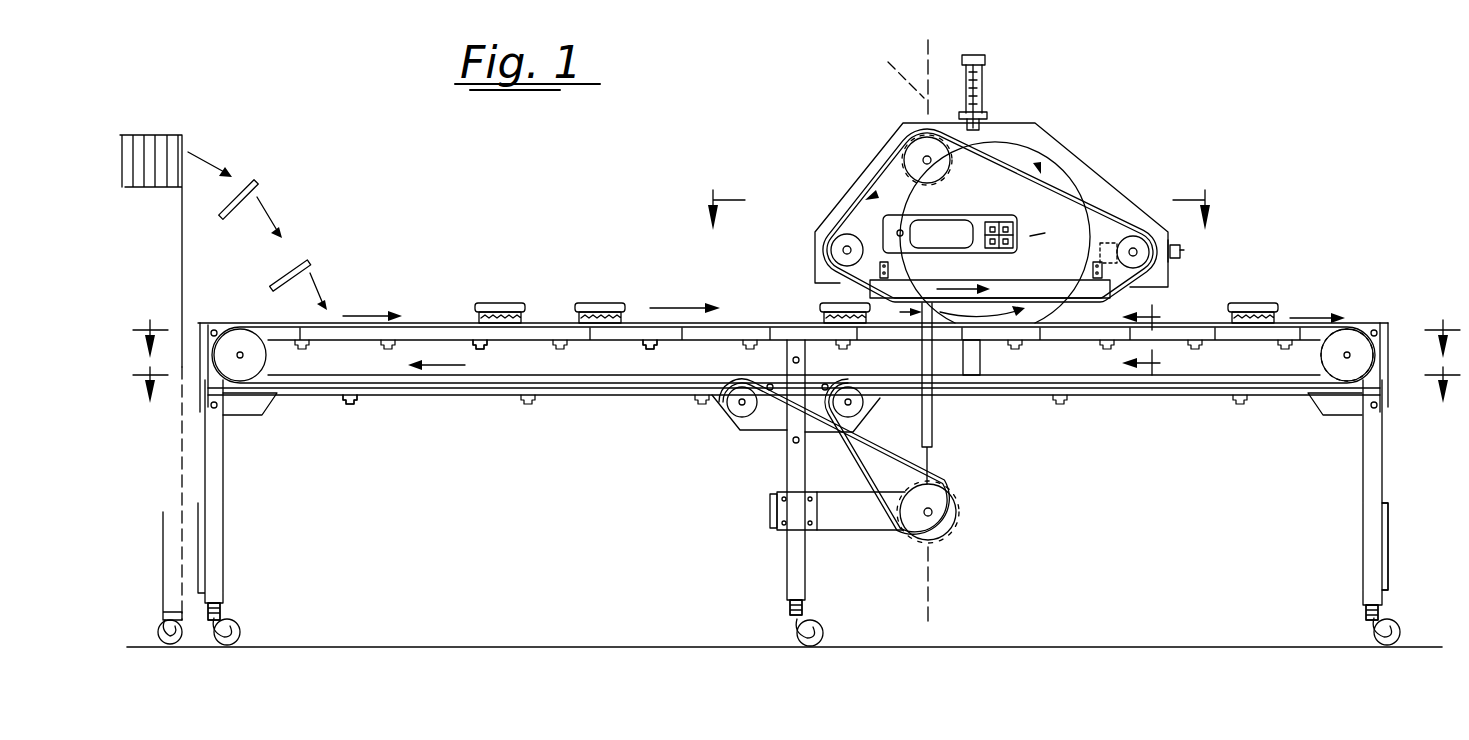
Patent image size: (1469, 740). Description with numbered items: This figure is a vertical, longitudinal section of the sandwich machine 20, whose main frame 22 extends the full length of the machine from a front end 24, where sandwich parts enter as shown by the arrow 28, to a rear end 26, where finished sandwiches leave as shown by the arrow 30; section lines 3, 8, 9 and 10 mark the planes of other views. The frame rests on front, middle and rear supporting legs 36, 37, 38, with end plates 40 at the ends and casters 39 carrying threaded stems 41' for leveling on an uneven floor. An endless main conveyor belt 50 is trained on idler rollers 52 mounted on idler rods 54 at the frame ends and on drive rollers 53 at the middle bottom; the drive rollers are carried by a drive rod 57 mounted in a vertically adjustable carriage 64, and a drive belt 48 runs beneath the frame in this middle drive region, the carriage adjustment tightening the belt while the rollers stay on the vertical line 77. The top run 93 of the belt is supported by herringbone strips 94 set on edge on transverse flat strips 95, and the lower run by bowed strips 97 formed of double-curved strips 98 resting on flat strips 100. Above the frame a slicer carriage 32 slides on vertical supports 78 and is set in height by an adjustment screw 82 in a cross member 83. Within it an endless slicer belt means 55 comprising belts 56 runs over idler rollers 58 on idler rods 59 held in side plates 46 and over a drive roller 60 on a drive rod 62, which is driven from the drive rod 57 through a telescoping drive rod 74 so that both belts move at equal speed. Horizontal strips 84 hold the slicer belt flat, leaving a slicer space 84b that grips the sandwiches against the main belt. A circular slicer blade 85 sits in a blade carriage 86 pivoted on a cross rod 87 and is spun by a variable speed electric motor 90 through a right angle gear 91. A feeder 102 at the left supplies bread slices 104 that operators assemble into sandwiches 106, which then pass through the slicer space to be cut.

The sandwich machine 20 is at (406, 152).
The main frame 22 is at (426, 323).
The front end 24 is at (198, 320).
The rear end 26 is at (1391, 322).
The arrow 28 is at (380, 312).
The arrow 30 is at (1308, 314).
The slicer carriage 32 is at (833, 192).
The front supporting leg 36 is at (224, 562).
The middle supporting leg 37 is at (786, 582).
The rear supporting leg 38 is at (1362, 558).
The caster 39 is at (222, 625).
The end plates 40 is at (1388, 545).
The threaded stems 41' is at (822, 595).
The side plates 46 is at (812, 240).
The drive belt 48 is at (820, 465).
The main conveyor belt 50 is at (1205, 388).
The idler rollers 52 is at (1338, 368).
The drive rollers 53 is at (945, 518).
The idler rods 54 is at (736, 420).
The slicer belt means 55 is at (1015, 172).
The slicer belts 56 is at (1070, 180).
The drive rod 57 is at (934, 510).
The idler rollers 58 is at (1135, 246).
The idler rods 59 is at (1168, 270).
The drive roller 60 is at (905, 148).
The drive rod 62 is at (925, 155).
The carriage 64 is at (850, 530).
The telescoping drive rod 74 is at (935, 420).
The vertical line 77 is at (930, 606).
The vertical supports 78 is at (980, 382).
The adjustment screw 82 is at (974, 53).
The cross member 83 is at (985, 75).
The horizontal strips 84 is at (1015, 292).
The slicer space 84b is at (838, 298).
The slicer blade 85 is at (1025, 140).
The blade carriage 86 is at (1020, 238).
The cross rod 87 is at (840, 228).
The electric motor 90 is at (958, 222).
The right angle gear 91 is at (1013, 222).
The top run 93 is at (550, 318).
The herringbone strips 94 is at (690, 343).
The transverse flat strips 95 is at (498, 346).
The bowed strips 97 is at (640, 392).
The double-curved strips 98 is at (425, 397).
The flat strips 100 is at (522, 400).
The feeder 102 is at (190, 275).
The bread slices 104 is at (150, 133).
The sandwiches 106 is at (495, 302).
The section line 3- 3 is at (695, 215).
The section line 8- 8 is at (158, 319).
The section line 9- 9 is at (158, 428).
The section line 10- 10 is at (1195, 316).